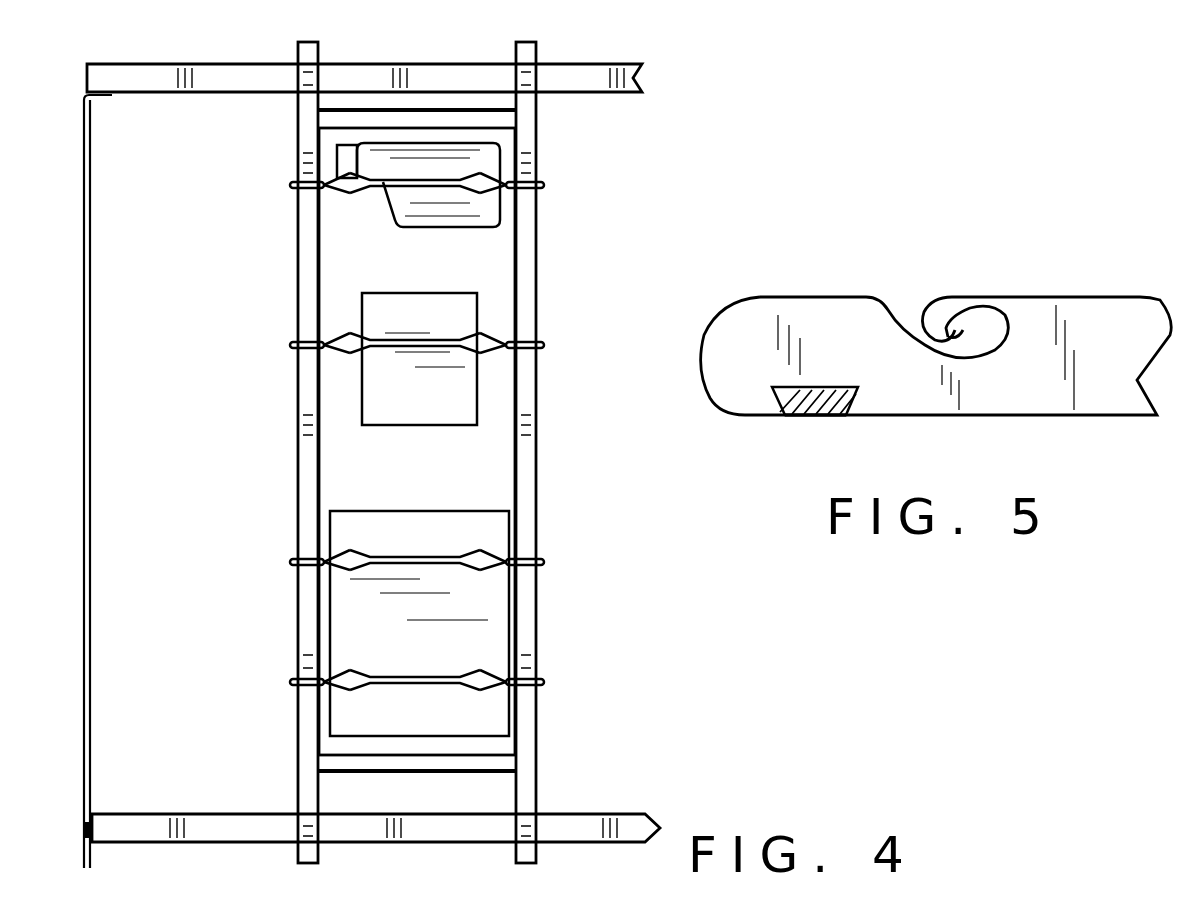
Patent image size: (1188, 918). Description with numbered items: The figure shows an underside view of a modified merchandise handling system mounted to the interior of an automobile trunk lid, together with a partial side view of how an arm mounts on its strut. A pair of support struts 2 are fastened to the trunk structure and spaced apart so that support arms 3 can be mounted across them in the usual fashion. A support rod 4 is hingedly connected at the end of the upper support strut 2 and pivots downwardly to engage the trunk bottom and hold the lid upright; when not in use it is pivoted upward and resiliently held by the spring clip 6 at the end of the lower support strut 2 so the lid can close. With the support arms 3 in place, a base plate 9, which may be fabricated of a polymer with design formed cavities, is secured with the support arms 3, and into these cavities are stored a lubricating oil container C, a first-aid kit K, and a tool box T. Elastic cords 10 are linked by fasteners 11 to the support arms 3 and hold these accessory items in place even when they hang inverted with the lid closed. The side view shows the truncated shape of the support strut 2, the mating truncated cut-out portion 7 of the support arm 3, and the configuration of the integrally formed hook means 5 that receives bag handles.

In FIG. 4, the support strut 2 is at (222, 76).
In FIG. 5, the support strut 2 is at (808, 416).
In FIG. 4, the support arm 3 is at (306, 98).
In FIG. 5, the support arm 3 is at (1060, 297).
In FIG. 4, the support rod 4 is at (82, 485).
In FIG. 5, the hook means 5 is at (945, 297).
In FIG. 4, the spring clip 6 is at (82, 832).
In FIG. 5, the truncated cut-out portion 7 is at (824, 386).
In FIG. 4, the base plate 9 is at (532, 283).
In FIG. 4, the elastic cord 10 is at (445, 186).
In FIG. 4, the fastener 11 is at (290, 185).
In FIG. 4, the lubricating oil container C is at (408, 198).
In FIG. 4, the first-aid kit K is at (442, 307).
In FIG. 4, the tool box T is at (418, 541).